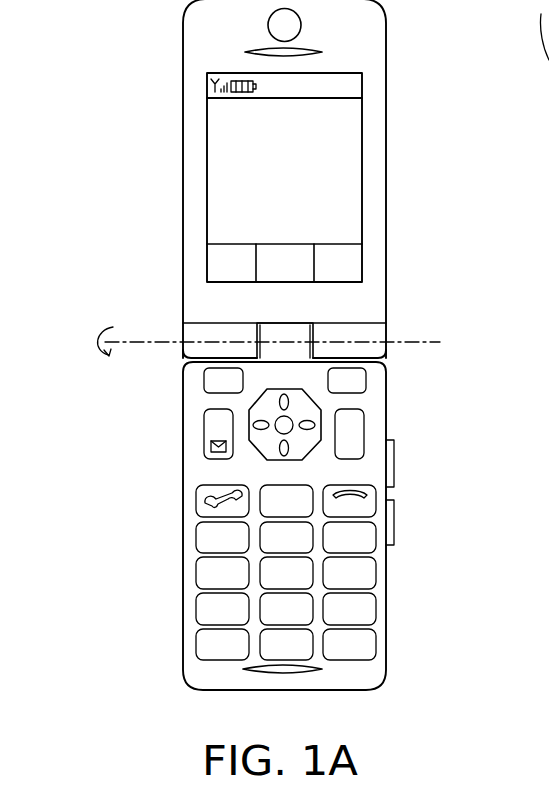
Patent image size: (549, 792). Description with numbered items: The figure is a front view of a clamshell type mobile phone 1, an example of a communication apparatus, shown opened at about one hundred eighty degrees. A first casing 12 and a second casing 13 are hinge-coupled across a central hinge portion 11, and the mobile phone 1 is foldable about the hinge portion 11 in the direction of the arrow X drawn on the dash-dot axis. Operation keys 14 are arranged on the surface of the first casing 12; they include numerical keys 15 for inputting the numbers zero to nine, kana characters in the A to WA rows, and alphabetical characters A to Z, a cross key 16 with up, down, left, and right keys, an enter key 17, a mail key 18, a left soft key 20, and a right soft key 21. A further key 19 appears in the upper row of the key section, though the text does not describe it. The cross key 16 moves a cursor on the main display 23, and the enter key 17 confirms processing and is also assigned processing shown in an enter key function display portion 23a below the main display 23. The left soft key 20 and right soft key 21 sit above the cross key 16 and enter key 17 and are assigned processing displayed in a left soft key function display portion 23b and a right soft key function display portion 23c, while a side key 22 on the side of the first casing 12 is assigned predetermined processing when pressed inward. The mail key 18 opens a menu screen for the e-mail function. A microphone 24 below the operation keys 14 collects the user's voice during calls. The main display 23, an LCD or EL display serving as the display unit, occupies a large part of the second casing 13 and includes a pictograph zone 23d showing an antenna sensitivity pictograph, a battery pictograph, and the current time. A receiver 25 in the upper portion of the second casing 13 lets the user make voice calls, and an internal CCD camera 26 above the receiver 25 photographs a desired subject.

The mobile phone 1 is at (449, 529).
The hinge portion 11 is at (288, 348).
The first casing 12 is at (387, 387).
The second casing 13 is at (387, 178).
The operation keys 14 is at (115, 367).
The numerical keys 15 is at (410, 522).
The cross key 16 is at (280, 402).
The enter key 17 is at (362, 422).
The mail key 18 is at (215, 428).
The call key 19 is at (200, 497).
The left soft key 20 is at (205, 380).
The right soft key 21 is at (358, 381).
The side key 22 is at (393, 462).
The main display 23 is at (352, 118).
The enter key function display portion 23a is at (288, 253).
The left soft key function display portion 23b is at (218, 262).
The right soft key function display portion 23c is at (352, 262).
The pictograph zone 23d is at (362, 85).
The microphone 24 is at (318, 668).
The receiver 25 is at (322, 52).
The internal CCD camera 26 is at (301, 23).